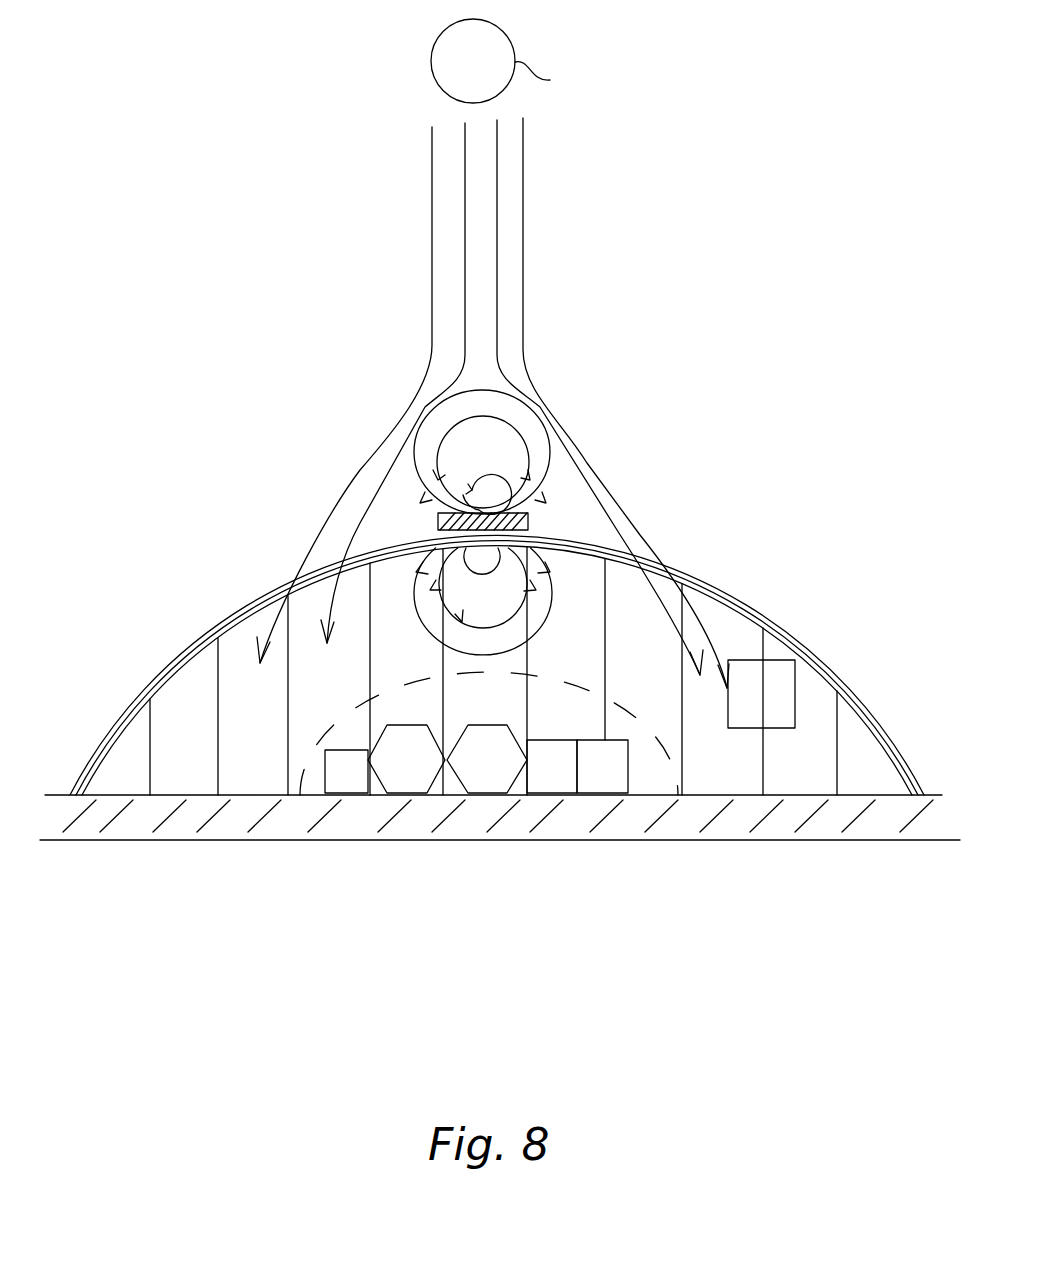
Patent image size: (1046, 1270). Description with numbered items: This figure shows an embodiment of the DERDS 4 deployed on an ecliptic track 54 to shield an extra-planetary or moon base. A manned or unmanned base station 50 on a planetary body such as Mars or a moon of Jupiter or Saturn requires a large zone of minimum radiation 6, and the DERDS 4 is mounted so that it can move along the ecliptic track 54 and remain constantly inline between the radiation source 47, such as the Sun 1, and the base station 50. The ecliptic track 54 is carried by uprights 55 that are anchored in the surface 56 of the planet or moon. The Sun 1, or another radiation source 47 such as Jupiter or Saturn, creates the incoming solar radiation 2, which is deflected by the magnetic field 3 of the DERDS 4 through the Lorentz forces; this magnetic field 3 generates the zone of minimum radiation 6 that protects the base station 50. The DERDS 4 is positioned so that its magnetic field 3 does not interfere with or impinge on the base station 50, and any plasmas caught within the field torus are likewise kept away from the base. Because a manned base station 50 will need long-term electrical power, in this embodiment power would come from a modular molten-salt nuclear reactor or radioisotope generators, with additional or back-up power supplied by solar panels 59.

The Sun 1 is at (437, 80).
The radiation source 47 is at (549, 80).
The incoming solar radiation 2 is at (523, 253).
The magnetic field 3 is at (423, 490).
The DERDS 4 is at (556, 520).
The base station 50 is at (490, 725).
The solar panels 59 is at (750, 660).
The ecliptic track 54 is at (785, 627).
The uprights 55 is at (837, 730).
The surface 56 is at (125, 793).
The zone of minimum radiation 6 is at (323, 738).